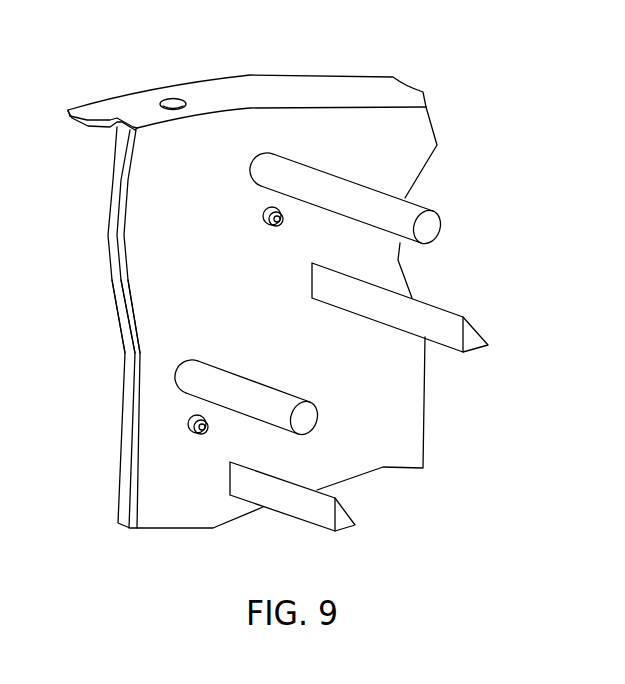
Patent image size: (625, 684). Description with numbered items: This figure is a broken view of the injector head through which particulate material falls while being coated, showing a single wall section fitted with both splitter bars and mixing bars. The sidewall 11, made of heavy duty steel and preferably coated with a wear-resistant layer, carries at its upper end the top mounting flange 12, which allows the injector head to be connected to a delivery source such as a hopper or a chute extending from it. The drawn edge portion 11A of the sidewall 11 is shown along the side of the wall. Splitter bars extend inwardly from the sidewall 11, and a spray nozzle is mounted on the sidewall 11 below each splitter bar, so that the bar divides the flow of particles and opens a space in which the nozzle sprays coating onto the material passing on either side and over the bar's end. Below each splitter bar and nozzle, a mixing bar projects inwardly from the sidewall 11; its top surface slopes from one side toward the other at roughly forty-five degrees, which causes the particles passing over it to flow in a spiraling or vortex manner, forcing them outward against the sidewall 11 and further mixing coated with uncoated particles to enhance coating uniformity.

The sidewall 11 is at (110, 220).
The bent edge portion of plate 11A is at (133, 272).
The top mounting flange 12 is at (315, 88).